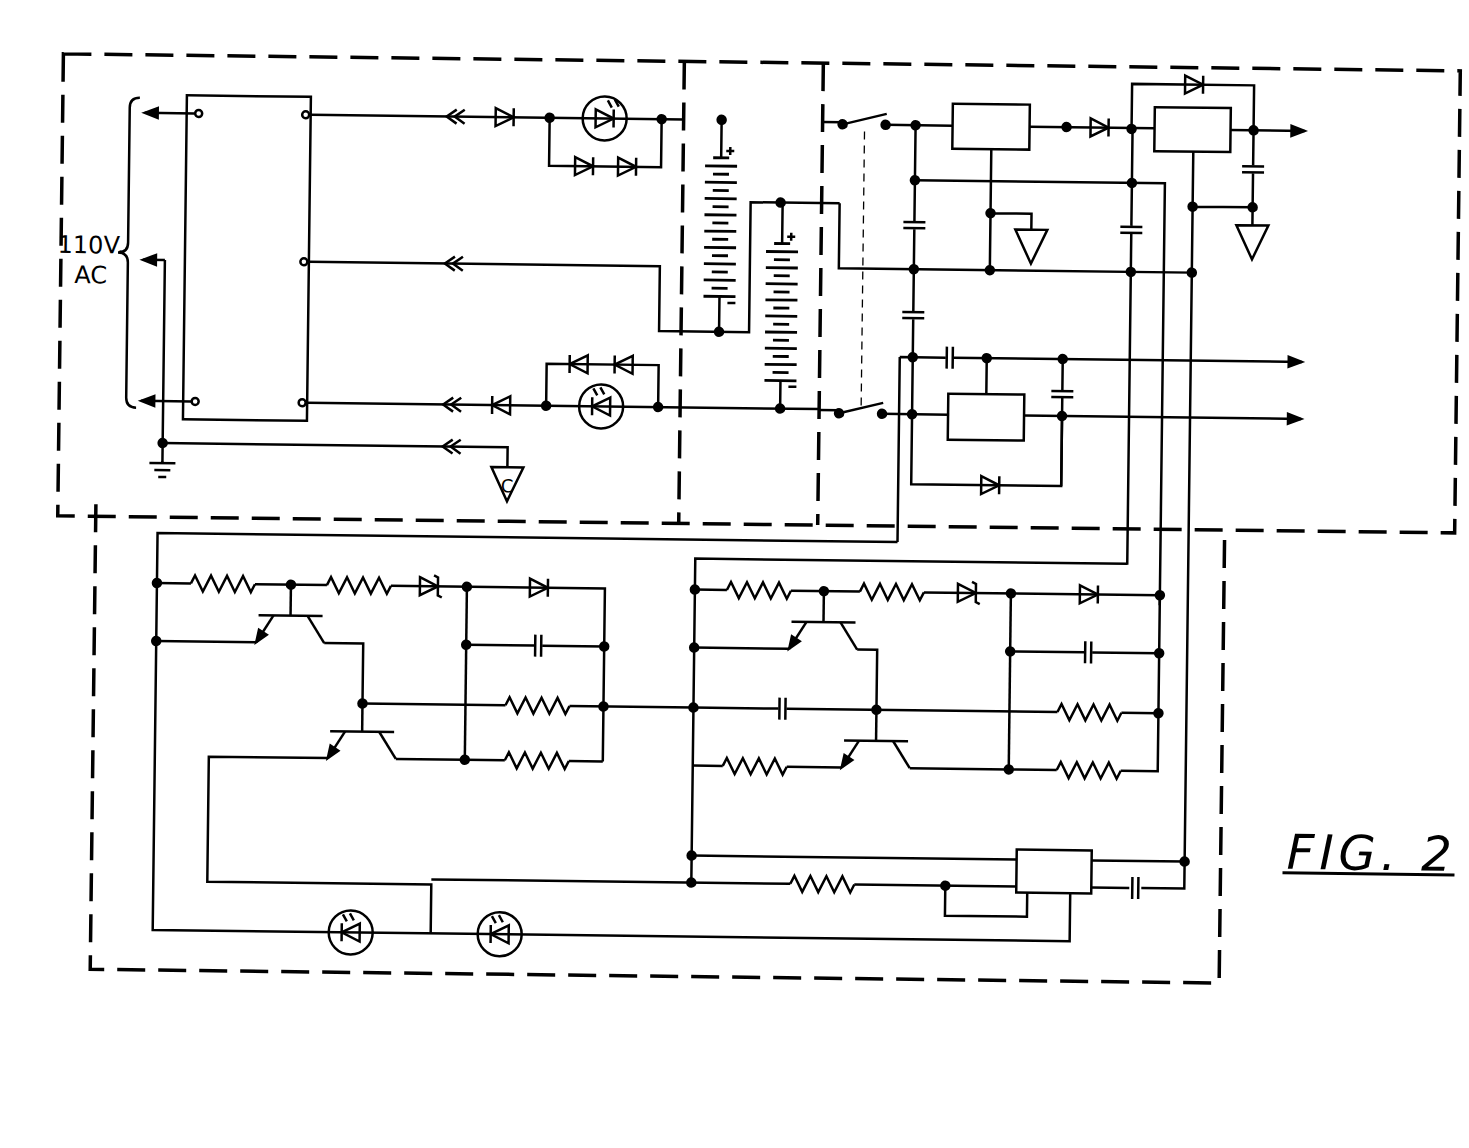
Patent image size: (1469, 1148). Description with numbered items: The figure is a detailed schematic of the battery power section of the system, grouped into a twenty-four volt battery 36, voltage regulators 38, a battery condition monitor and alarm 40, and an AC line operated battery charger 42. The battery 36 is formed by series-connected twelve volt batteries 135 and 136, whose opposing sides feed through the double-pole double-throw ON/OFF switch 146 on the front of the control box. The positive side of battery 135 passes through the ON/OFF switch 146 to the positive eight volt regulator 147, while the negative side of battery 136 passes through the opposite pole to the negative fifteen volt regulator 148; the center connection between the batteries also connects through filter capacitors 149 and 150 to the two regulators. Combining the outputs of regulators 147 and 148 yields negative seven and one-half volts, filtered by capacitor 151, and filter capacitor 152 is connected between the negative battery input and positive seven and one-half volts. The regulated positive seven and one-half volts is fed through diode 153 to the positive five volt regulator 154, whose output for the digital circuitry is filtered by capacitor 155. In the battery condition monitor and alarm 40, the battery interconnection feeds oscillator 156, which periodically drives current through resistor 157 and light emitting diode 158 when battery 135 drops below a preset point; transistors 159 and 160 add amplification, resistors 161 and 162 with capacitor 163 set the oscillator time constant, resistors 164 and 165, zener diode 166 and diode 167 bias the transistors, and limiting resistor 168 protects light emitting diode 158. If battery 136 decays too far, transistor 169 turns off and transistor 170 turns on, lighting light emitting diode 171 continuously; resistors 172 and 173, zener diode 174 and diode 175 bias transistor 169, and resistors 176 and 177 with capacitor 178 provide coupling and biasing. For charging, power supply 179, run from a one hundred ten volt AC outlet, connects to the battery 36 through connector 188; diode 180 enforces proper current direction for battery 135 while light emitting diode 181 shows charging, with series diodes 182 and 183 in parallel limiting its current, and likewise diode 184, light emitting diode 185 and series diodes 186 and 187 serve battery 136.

The battery 36 is at (740, 383).
The voltage regulators 38 is at (1359, 226).
The battery condition monitor and alarm 40 is at (661, 628).
The AC line operated battery charger 42 is at (468, 323).
The battery 135 is at (730, 164).
The battery 136 is at (788, 242).
The ON/OFF switch 146 is at (884, 424).
The +8 volt regulator 147 is at (1002, 136).
The −15 volt regulator 148 is at (1001, 426).
The filter capacitor 149 is at (920, 218).
The filter capacitor 150 is at (924, 298).
The capacitor 151 is at (1066, 388).
The filter capacitor 152 is at (957, 340).
The diode 153 is at (1101, 113).
The +5 volt regulator 154 is at (1204, 136).
The capacitor 155 is at (1256, 169).
The oscillator 156 is at (1074, 880).
The resistor 157 is at (829, 891).
The light emitting diode 158 is at (525, 931).
The transistor 159 is at (889, 741).
The transistor 160 is at (822, 613).
The resistor 161 is at (1092, 699).
The resistor 162 is at (1092, 758).
The capacitor 163 is at (1097, 648).
The resistor 164 is at (762, 595).
The resistor 165 is at (893, 598).
The zener diode 166 is at (969, 601).
The diode 167 is at (1091, 601).
The resistor 168 is at (759, 775).
The transistor 169 is at (303, 619).
The transistor 170 is at (356, 733).
The light emitting diode 171 is at (338, 930).
The resistor 172 is at (232, 577).
The resistor 173 is at (368, 577).
The zener diode 174 is at (434, 577).
The diode 175 is at (546, 577).
The resistor 176 is at (545, 694).
The resistor 177 is at (542, 752).
The capacitor 178 is at (548, 647).
The power supply 179 is at (252, 208).
The diode 180 is at (508, 112).
The light emitting diode 181 is at (612, 102).
The diode 182 is at (580, 180).
The diode 183 is at (626, 180).
The diode 184 is at (502, 400).
The light emitting diode 185 is at (600, 431).
The diode 186 is at (577, 358).
The diode 187 is at (622, 358).
The connector 188 is at (442, 404).